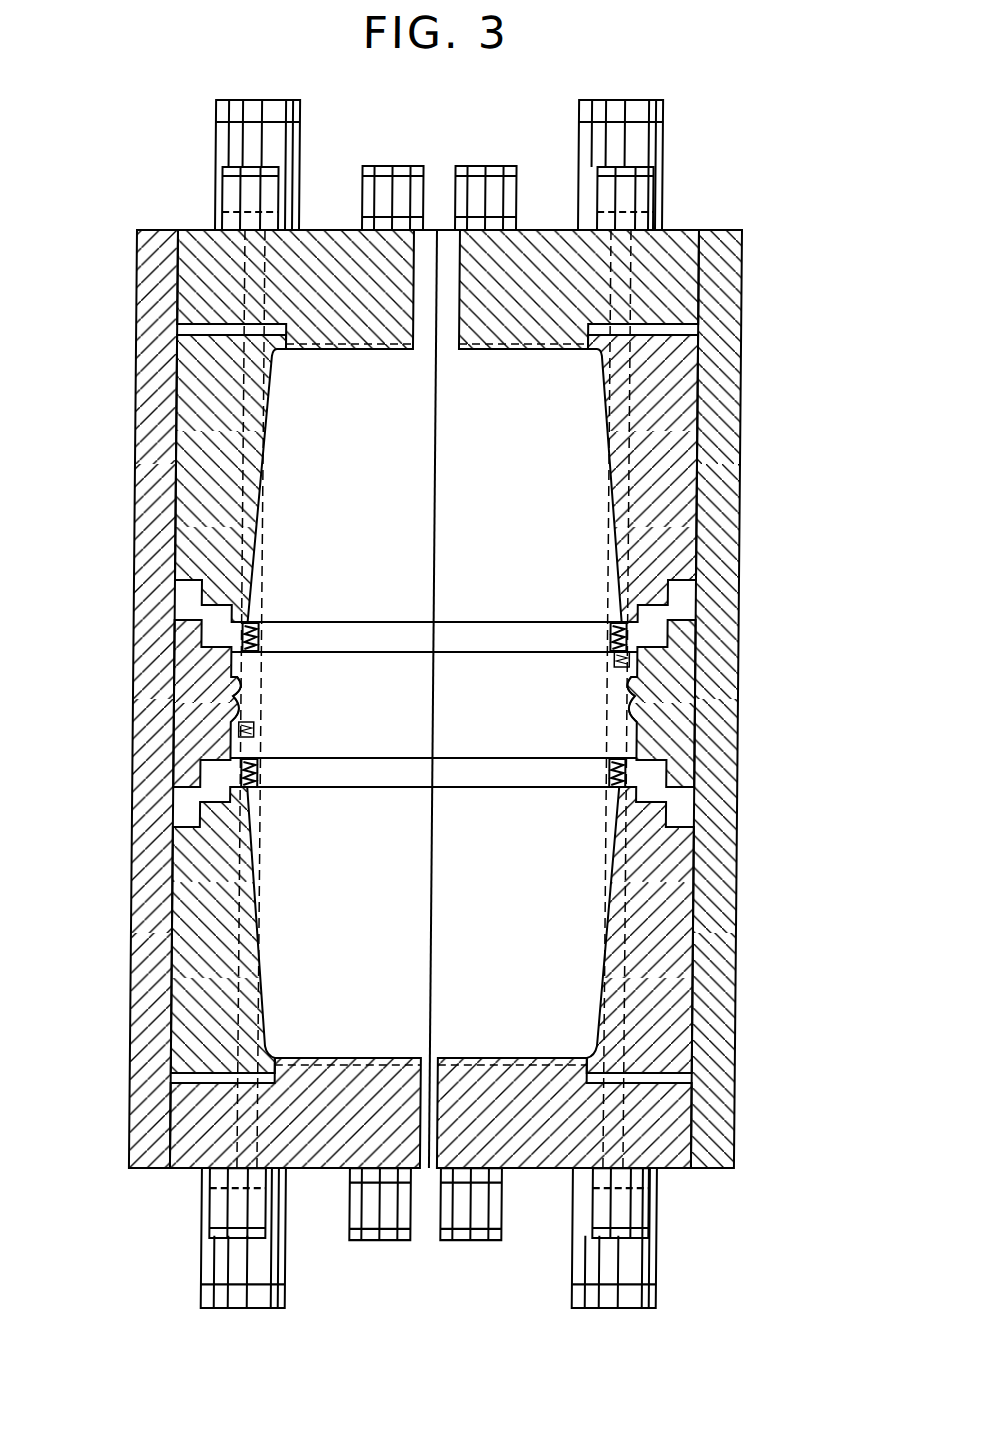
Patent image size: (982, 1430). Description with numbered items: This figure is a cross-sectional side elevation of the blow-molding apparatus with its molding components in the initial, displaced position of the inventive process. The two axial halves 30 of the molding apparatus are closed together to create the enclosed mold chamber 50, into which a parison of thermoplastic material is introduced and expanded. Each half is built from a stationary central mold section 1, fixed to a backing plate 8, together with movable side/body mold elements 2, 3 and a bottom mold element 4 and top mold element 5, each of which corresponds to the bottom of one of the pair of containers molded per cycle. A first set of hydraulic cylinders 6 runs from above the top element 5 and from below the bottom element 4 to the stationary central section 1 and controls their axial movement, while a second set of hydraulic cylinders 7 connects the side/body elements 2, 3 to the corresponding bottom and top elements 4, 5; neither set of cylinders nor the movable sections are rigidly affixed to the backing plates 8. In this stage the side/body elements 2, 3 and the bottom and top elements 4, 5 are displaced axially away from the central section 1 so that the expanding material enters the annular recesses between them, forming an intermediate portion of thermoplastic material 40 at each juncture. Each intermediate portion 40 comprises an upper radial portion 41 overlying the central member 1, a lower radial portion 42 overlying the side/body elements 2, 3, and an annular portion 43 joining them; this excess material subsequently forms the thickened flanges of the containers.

The stationary central mold section 1 is at (196, 703).
The side/body mold element 2 is at (196, 952).
The side/body mold element 3 is at (192, 460).
The bottom mold element 4 is at (193, 1134).
The top mold element 5 is at (192, 291).
The first set of hydraulic cylinders 6 is at (255, 106).
The second set of hydraulic cylinders 7 is at (268, 166).
The backing plate 8 is at (140, 388).
The half of the molding apparatus 30 is at (184, 196).
The intermediate portion of thermoplastic material 40 is at (250, 676).
The upper radial portion 41 is at (250, 715).
The lower radial portion 42 is at (265, 645).
The annular portion 43 is at (258, 732).
The mold chamber 50 is at (368, 903).